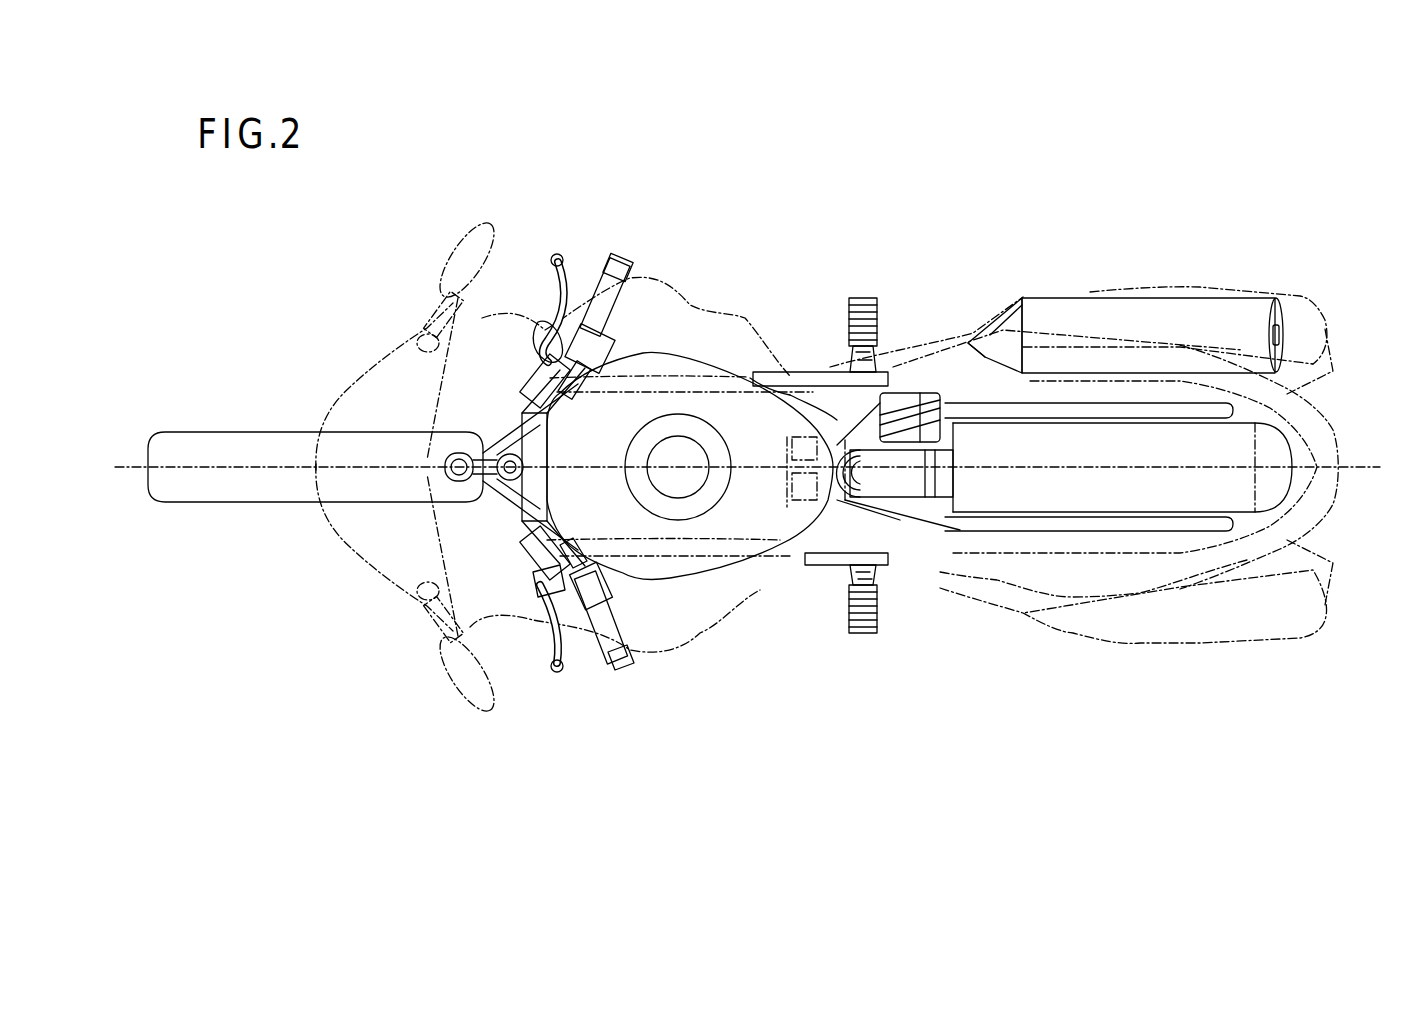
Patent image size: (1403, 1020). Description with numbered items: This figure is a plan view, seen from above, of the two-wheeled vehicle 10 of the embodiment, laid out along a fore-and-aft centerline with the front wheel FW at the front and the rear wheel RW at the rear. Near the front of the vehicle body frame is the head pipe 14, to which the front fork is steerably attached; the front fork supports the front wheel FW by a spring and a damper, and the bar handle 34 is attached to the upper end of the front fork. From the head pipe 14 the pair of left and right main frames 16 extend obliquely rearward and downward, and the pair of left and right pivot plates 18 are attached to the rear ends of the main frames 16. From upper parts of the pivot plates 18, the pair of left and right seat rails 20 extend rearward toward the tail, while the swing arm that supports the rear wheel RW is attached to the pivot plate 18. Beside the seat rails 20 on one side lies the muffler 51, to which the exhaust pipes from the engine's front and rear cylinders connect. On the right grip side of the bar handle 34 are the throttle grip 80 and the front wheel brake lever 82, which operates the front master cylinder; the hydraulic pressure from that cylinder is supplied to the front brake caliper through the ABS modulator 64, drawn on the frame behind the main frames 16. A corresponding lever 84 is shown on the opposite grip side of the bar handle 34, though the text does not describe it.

The two-wheeled vehicle 10 is at (714, 217).
The head pipe 14 is at (460, 450).
The main frames 16 is at (643, 370).
The pivot plates 18 is at (806, 385).
The seat rails 20 is at (1053, 405).
The bar handle 34 is at (612, 674).
The muffler 51 is at (1210, 318).
The ABS modulator 64 is at (900, 400).
The throttle grip 80 is at (595, 289).
The front wheel brake lever 82 is at (553, 282).
The clutch lever 84 is at (550, 648).
The front wheel FW is at (222, 504).
The rear wheel RW is at (1278, 485).